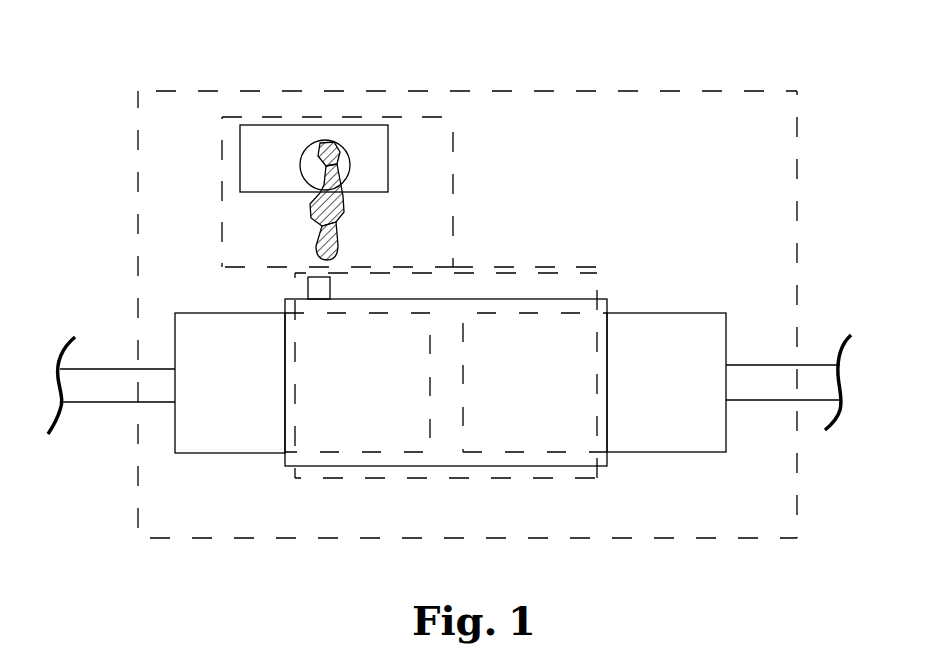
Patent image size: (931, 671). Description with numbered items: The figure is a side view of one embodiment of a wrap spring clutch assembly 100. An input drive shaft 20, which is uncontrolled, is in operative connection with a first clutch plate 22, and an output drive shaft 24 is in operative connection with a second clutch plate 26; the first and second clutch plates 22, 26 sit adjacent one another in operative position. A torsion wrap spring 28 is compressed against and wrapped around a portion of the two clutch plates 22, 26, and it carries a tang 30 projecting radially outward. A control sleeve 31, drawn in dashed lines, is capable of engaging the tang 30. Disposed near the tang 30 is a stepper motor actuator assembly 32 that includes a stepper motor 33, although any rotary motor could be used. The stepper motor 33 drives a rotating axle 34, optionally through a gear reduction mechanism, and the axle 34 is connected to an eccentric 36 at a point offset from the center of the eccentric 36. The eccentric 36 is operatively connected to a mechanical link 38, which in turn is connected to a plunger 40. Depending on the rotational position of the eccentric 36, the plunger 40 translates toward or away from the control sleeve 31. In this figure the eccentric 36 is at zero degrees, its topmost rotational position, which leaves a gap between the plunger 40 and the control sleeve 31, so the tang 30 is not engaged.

The wrap spring clutch assembly 100 is at (618, 91).
The input drive shaft 20 is at (122, 402).
The first clutch plate 22 is at (213, 453).
The output drive shaft 24 is at (782, 400).
The second clutch plate 26 is at (705, 452).
The torsion wrap spring 28 is at (455, 466).
The tang 30 is at (331, 284).
The control sleeve 31 is at (575, 267).
The stepper motor actuator assembly 32 is at (315, 117).
The stepper motor 33 is at (368, 147).
The rotating axle 34 is at (318, 153).
The eccentric 36 is at (350, 167).
The mechanical link 38 is at (344, 204).
The plunger 40 is at (339, 244).